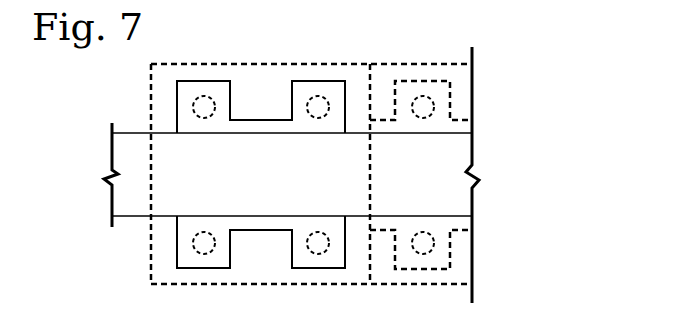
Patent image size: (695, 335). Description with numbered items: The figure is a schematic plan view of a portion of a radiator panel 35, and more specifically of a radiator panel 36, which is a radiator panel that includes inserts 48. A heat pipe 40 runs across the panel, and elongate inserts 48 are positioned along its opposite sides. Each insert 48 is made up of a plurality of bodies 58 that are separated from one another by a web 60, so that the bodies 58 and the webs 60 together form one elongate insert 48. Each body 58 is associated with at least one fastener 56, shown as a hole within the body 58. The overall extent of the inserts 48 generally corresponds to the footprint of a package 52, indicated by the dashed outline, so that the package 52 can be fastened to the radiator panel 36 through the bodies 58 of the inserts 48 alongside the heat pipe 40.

The radiator panel 35 is at (527, 51).
The radiator panel 36 is at (492, 78).
The heat pipe 40 is at (141, 133).
The insert 48 is at (189, 79).
The package 52 is at (245, 64).
The fastener 56 is at (204, 118).
The body 58 is at (204, 81).
The web 60 is at (270, 109).